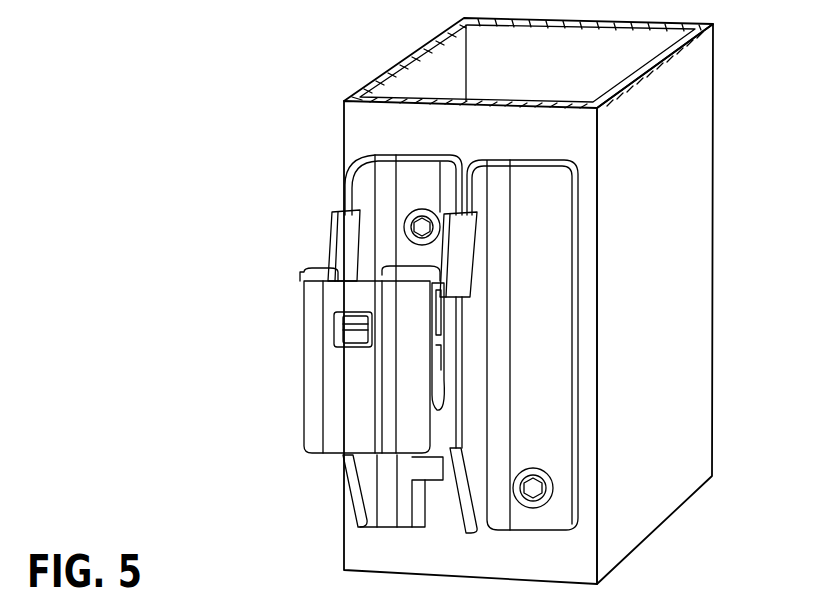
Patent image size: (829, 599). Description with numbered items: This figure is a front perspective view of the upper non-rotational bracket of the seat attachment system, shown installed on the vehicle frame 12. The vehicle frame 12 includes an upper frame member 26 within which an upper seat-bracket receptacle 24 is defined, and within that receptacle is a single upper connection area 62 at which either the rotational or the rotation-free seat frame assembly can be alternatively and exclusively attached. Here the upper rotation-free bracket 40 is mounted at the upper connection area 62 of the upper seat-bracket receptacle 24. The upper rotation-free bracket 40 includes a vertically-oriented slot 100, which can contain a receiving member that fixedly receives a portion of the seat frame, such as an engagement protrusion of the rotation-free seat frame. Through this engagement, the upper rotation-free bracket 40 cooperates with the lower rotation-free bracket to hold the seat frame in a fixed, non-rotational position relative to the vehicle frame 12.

The vehicle frame 12 is at (283, 119).
The upper seat-bracket receptacle 24 is at (580, 272).
The upper frame member 26 is at (380, 132).
The upper rotation-free bracket 40 is at (340, 376).
The upper connection area 62 is at (544, 470).
The vertically-oriented slot 100 is at (447, 353).